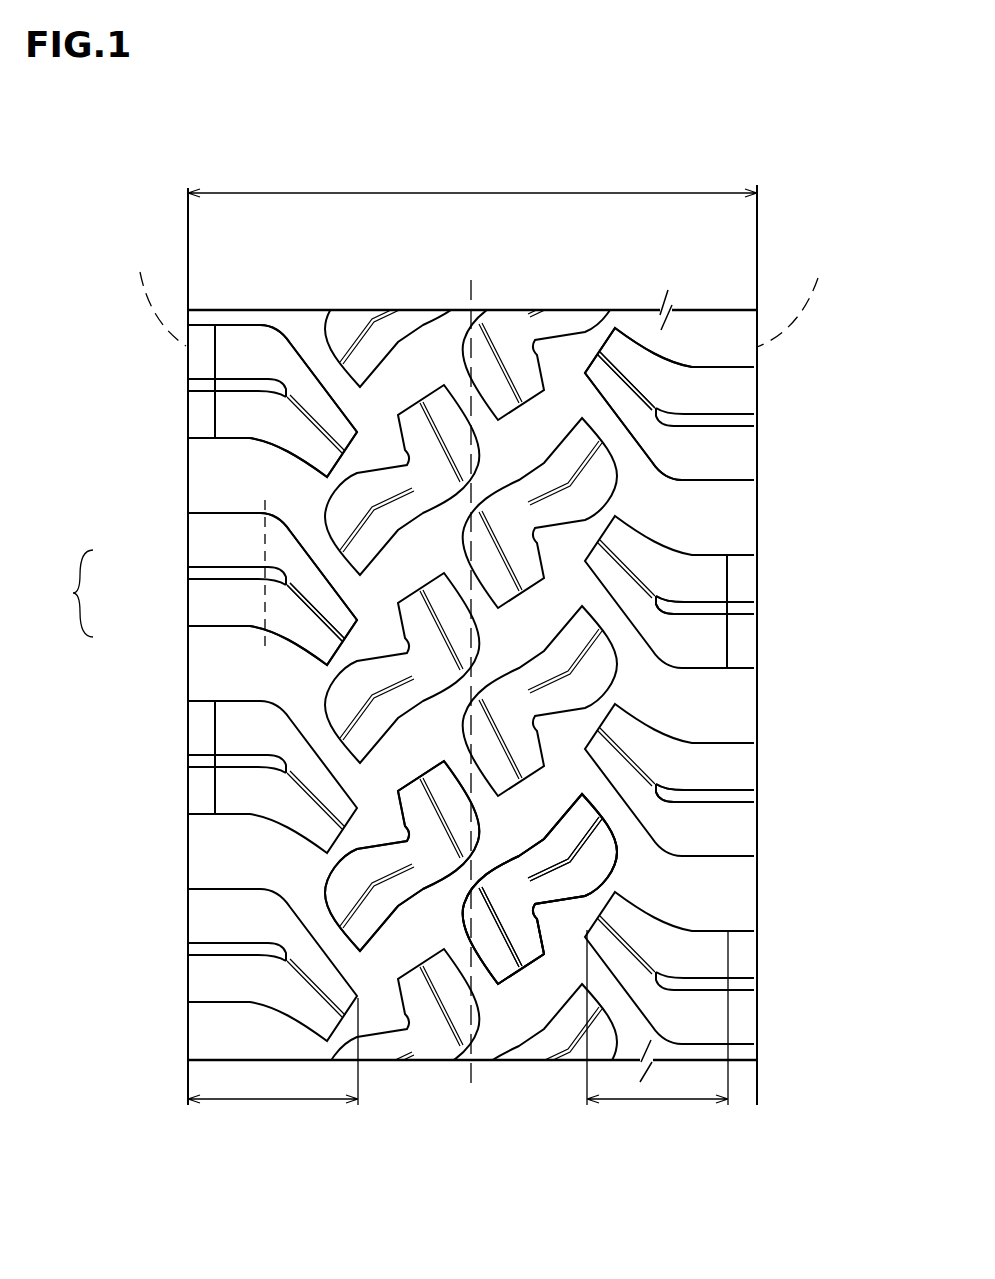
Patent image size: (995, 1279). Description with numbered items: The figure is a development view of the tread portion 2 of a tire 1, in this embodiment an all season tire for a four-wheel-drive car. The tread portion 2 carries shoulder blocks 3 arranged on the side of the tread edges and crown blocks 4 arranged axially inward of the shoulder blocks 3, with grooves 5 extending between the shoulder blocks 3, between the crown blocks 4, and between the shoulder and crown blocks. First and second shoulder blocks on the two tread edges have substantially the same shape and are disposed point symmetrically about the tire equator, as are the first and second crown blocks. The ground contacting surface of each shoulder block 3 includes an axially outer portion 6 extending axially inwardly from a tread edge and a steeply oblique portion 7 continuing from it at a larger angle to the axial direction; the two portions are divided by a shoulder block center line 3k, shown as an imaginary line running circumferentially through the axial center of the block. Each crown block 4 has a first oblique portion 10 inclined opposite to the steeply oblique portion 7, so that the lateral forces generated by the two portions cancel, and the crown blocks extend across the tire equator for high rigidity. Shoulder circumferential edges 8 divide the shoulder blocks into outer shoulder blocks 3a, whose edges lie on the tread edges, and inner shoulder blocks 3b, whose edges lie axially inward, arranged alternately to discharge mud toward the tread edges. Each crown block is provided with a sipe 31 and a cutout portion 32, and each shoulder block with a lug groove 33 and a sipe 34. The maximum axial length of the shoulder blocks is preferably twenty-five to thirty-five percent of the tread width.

The tire 1 is at (848, 175).
The tread portion 2 is at (775, 221).
The shoulder blocks 3 is at (235, 422).
The outer shoulder blocks 3a is at (733, 823).
The inner shoulder blocks 3b is at (693, 642).
The shoulder block center line 3k is at (257, 650).
The crown blocks 4 is at (338, 509).
The grooves 5 is at (320, 349).
The axially outer portion 6 is at (220, 541).
The steeply oblique portion 7 is at (293, 620).
The shoulder circumferential edges 8 is at (730, 640).
The first oblique portion 10 is at (343, 885).
The sipe 31 is at (587, 850).
The cutout portion 32 is at (555, 912).
The lug groove 33 is at (670, 980).
The sipe 34 is at (640, 950).